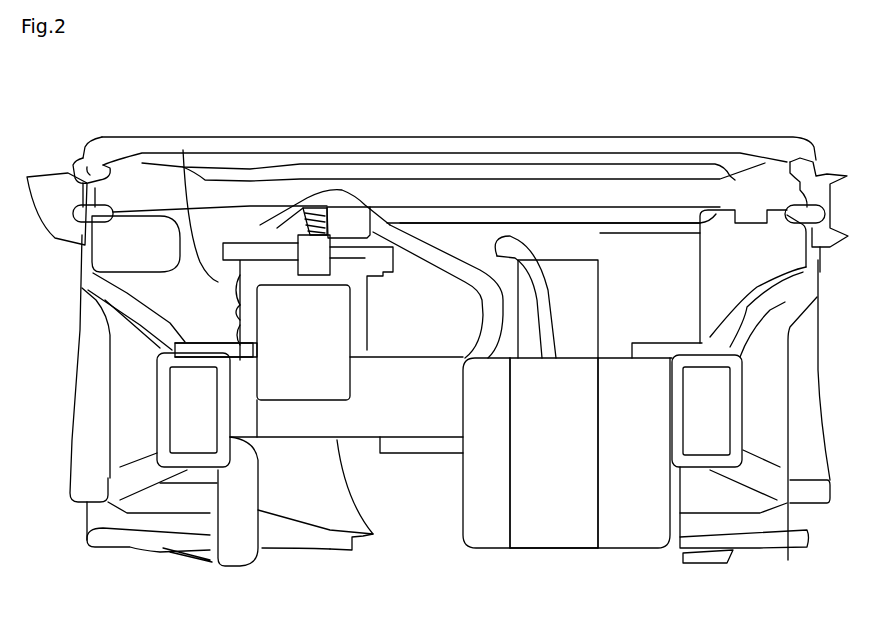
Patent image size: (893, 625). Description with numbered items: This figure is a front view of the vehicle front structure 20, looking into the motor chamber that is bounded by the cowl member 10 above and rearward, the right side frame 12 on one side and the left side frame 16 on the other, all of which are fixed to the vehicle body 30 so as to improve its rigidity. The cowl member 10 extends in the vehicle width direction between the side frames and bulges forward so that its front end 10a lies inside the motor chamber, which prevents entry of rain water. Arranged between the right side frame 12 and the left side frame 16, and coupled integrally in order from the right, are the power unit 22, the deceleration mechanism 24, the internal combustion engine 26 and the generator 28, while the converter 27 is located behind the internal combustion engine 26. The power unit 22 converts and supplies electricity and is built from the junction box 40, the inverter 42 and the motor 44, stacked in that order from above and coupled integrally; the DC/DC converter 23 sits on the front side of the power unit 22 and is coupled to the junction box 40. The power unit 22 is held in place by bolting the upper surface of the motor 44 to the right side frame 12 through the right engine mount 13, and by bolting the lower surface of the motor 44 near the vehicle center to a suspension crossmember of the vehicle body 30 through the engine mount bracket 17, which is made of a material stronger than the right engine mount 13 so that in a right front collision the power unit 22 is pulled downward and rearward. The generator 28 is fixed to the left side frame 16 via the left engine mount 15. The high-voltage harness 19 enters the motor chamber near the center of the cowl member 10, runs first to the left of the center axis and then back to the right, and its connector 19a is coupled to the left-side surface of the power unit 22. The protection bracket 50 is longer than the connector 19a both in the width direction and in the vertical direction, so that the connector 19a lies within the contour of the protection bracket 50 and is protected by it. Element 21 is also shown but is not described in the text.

The cowl member 10 is at (665, 197).
The front end 10a is at (424, 223).
The right side frame 12 is at (163, 403).
The right engine mount 13 is at (207, 343).
The left engine mount 15 is at (652, 352).
The left side frame 16 is at (737, 392).
The engine mount bracket 17 is at (423, 448).
The high-voltage harness 19 is at (452, 272).
The connector 19a is at (347, 223).
The vehicle front structure 20 is at (78, 325).
The hose 21 is at (518, 246).
The power unit 22 is at (183, 150).
The DC/DC converter 23 is at (330, 332).
The deceleration mechanism 24 is at (487, 523).
The internal combustion engine 26 is at (557, 523).
The converter 27 is at (585, 290).
The generator 28 is at (635, 523).
The vehicle body 30 is at (795, 522).
The junction box 40 is at (212, 285).
The inverter 42 is at (223, 327).
The motor 44 is at (297, 413).
The protection bracket 50 is at (298, 194).